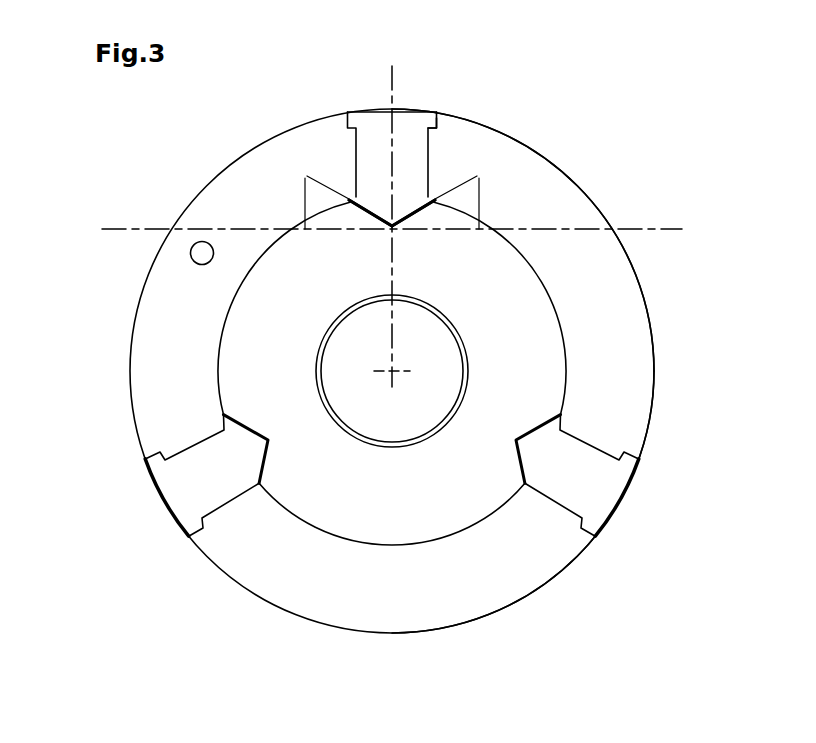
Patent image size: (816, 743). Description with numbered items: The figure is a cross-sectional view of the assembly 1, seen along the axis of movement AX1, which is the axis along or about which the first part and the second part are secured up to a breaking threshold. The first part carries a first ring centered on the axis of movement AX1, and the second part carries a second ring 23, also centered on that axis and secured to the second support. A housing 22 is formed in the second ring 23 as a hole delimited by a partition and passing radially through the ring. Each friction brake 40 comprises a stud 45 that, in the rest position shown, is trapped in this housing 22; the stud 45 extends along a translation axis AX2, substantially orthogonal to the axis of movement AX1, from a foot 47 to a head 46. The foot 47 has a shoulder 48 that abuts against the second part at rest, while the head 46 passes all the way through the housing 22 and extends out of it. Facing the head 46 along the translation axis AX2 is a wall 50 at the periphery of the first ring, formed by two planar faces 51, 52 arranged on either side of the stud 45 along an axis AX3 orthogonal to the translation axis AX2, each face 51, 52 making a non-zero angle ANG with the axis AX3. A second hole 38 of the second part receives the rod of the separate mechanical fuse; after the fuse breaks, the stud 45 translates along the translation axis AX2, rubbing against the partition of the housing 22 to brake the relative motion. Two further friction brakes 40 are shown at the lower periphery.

The assembly 1 is at (628, 148).
The housing 22 is at (355, 163).
The second ring 23 is at (543, 587).
The second hole 38 is at (190, 253).
The friction brake 40 is at (147, 502).
The stud 45 is at (430, 145).
The head 46 is at (402, 212).
The foot 47 is at (367, 108).
The shoulder 48 is at (437, 118).
The wall 50 is at (314, 244).
The face 51 is at (418, 205).
The face 52 is at (354, 199).
The axis of movement AX1 is at (393, 371).
The translation axis AX2 is at (392, 68).
The axis AX3 is at (115, 229).
The angle ANG is at (387, 202).